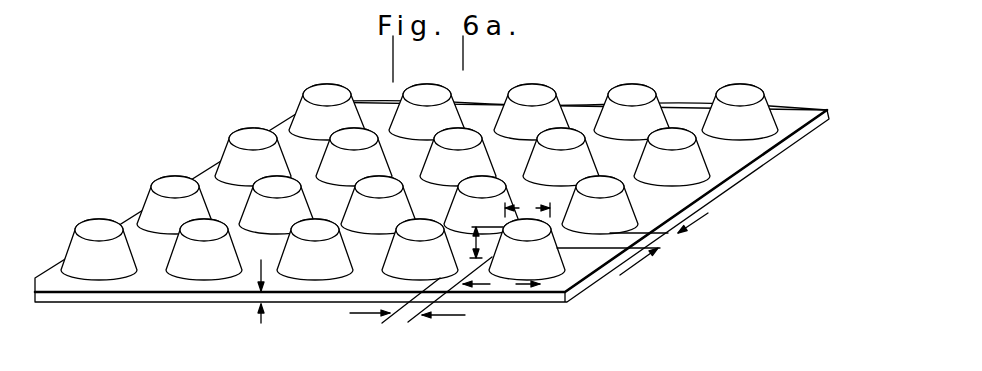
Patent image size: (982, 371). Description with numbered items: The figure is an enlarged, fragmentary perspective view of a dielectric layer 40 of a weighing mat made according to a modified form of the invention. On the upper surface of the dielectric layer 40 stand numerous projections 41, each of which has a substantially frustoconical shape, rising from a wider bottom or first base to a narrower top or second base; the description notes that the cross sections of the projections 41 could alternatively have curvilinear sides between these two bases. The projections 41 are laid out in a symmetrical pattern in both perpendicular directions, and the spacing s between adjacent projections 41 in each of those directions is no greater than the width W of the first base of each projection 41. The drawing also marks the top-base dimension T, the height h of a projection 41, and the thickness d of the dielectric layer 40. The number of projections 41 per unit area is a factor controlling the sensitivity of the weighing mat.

The dielectric layer 40 is at (190, 303).
The projections 41 is at (87, 230).
The top diameter of projection T is at (527, 210).
The height of projection h is at (485, 242).
The width of the first base W is at (501, 284).
The spacing between adjacent projections s is at (529, 268).
The plate thickness d is at (259, 303).